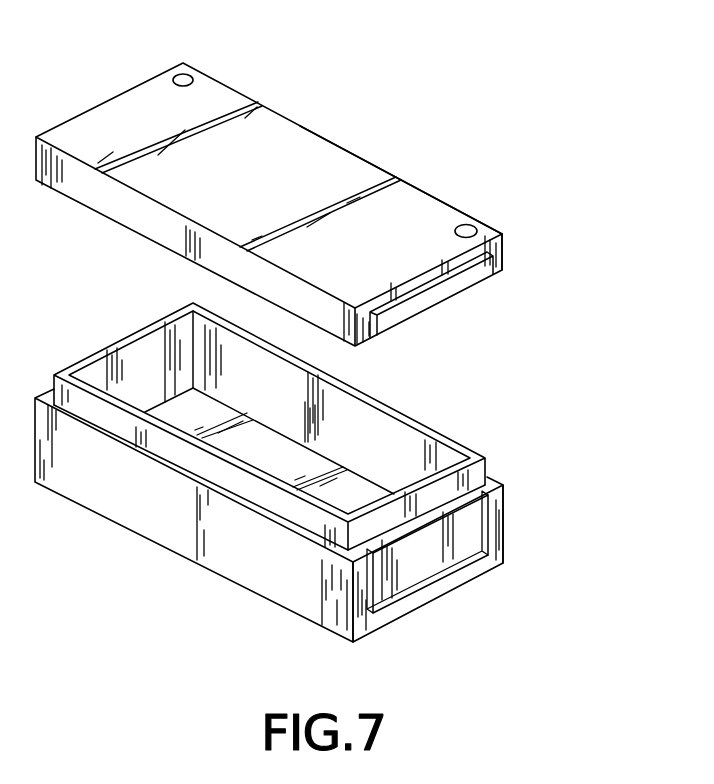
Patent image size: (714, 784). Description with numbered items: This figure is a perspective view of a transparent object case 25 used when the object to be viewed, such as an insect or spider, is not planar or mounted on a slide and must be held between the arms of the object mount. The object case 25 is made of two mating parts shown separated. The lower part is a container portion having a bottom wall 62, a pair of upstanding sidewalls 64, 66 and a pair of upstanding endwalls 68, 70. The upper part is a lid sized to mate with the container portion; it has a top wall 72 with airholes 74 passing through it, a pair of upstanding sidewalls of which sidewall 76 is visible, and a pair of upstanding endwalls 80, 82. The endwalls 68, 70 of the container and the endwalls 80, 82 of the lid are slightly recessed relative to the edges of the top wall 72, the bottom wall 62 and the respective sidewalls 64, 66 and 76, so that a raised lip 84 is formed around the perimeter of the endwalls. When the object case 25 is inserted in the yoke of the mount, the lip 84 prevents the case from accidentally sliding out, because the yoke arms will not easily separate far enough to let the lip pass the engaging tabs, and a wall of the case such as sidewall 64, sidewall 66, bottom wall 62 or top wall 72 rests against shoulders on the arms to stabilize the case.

The object case 25 is at (368, 67).
The bottom wall 62 is at (170, 397).
The sidewall 64 is at (168, 538).
The sidewall 66 is at (393, 428).
The endwall 68 is at (422, 558).
The endwall 70 is at (100, 360).
The top wall 72 is at (310, 147).
The airholes 74 is at (195, 75).
The sidewall 76 is at (430, 195).
The endwall 80 is at (137, 87).
The endwall 82 is at (445, 287).
The raised lip 84 is at (506, 250).